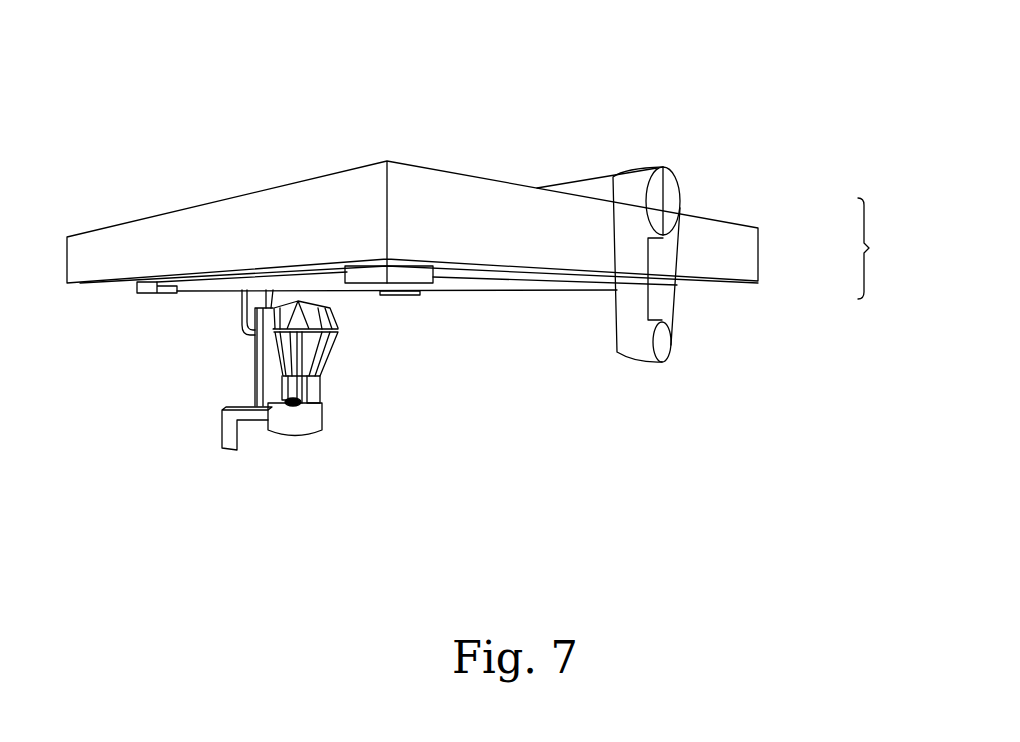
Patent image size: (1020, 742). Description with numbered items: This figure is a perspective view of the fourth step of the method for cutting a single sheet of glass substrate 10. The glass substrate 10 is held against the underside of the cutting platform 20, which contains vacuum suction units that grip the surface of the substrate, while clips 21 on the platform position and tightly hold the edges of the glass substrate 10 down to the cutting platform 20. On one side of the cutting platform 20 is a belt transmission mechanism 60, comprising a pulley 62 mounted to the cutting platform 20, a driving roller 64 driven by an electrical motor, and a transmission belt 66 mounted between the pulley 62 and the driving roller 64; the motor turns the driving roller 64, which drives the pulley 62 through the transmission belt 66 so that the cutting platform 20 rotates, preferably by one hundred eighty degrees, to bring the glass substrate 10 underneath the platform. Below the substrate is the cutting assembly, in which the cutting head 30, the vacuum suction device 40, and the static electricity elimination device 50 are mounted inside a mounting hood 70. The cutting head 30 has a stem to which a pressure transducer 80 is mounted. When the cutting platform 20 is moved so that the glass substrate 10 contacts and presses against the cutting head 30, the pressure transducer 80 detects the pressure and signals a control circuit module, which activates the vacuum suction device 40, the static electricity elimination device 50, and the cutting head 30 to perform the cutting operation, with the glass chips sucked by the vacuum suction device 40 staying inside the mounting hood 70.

The single sheet of glass substrate 10 is at (503, 277).
The cutting platform 20 is at (452, 215).
The clip 21 is at (404, 278).
The cutting head 30 is at (298, 336).
The vacuum suction device 40 is at (277, 416).
The static electricity elimination device 50 is at (267, 312).
The belt transmission mechanism 60 is at (721, 264).
The pulley 62 is at (665, 201).
The driving roller 64 is at (662, 343).
The transmission belt 66 is at (658, 267).
The mounting hood 70 is at (325, 337).
The pressure transducer 80 is at (296, 403).